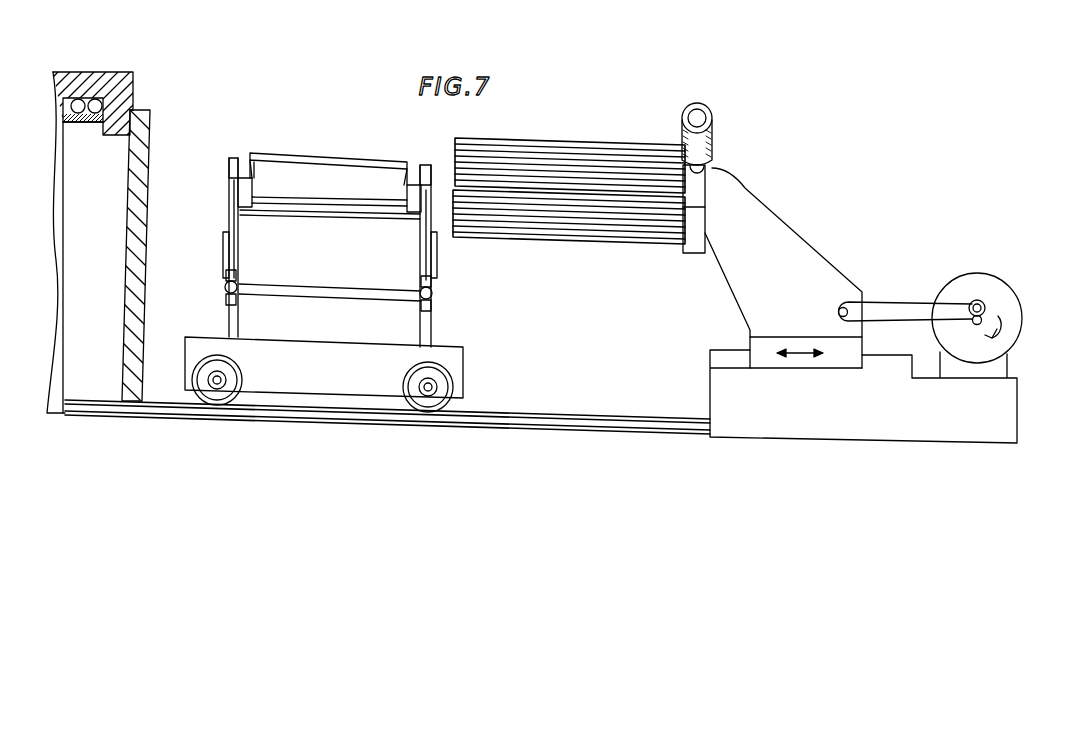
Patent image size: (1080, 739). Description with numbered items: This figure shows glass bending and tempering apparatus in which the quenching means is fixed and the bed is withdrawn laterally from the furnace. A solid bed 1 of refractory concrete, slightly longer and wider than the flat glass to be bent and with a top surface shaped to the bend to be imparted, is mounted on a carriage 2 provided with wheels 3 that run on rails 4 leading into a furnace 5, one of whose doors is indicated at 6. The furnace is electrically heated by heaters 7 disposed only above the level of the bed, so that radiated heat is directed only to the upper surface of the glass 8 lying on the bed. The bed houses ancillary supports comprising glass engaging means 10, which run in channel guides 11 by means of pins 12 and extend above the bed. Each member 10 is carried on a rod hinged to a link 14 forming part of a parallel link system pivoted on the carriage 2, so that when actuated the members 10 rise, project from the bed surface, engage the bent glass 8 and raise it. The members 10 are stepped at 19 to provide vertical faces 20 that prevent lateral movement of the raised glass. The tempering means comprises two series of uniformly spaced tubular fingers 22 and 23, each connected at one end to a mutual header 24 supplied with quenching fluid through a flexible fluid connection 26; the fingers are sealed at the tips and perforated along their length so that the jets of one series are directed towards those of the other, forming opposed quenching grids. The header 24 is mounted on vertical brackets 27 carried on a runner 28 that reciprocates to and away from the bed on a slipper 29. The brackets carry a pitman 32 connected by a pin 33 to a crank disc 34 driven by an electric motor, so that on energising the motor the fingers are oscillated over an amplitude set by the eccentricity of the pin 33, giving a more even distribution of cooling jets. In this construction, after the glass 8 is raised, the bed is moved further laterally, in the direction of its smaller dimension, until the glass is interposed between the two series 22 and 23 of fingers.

The solid bed 1 is at (388, 326).
The carriage 2 is at (390, 347).
The wheels 3 is at (228, 380).
The rails 4 is at (420, 421).
The furnace 5 is at (89, 185).
The door 6 is at (143, 118).
The heaters 7 is at (96, 101).
The glass 8 is at (342, 172).
The glass engaging means 10 is at (246, 201).
The channel guides 11 is at (236, 229).
The pins 12 is at (237, 188).
The link 14 is at (229, 258).
The steps 19 is at (250, 178).
The vertical faces 20 is at (246, 176).
The tubular fingers 22 is at (528, 153).
The tubular fingers 23 is at (600, 213).
The header 24 is at (697, 230).
The flexible fluid connection 26 is at (713, 114).
The vertical brackets 27 is at (800, 255).
The runner 28 is at (803, 347).
The slipper 29 is at (712, 356).
The pitman 32 is at (886, 302).
The pin 33 is at (977, 300).
The crank disc 34 is at (993, 290).